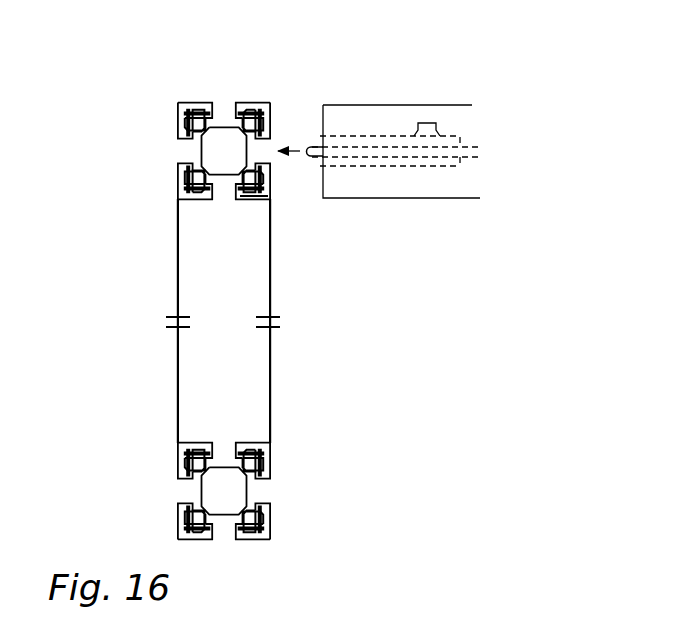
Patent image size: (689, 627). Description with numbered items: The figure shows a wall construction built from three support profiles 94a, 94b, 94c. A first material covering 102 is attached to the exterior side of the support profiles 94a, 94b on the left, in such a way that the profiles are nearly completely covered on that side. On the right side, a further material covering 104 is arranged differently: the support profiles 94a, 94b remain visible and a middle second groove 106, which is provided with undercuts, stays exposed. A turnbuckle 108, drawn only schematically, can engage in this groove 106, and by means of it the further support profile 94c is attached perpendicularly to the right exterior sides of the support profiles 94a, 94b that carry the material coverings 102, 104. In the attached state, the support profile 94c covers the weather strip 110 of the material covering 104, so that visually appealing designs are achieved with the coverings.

The first material covering 102 is at (236, 287).
The further material covering 104 is at (277, 376).
The second groove 106 is at (296, 287).
The turnbuckle 108 is at (316, 153).
The weather strip 110 is at (252, 200).
The support profile 94a is at (260, 100).
The support profile 94b is at (269, 507).
The support profile 94c is at (431, 190).